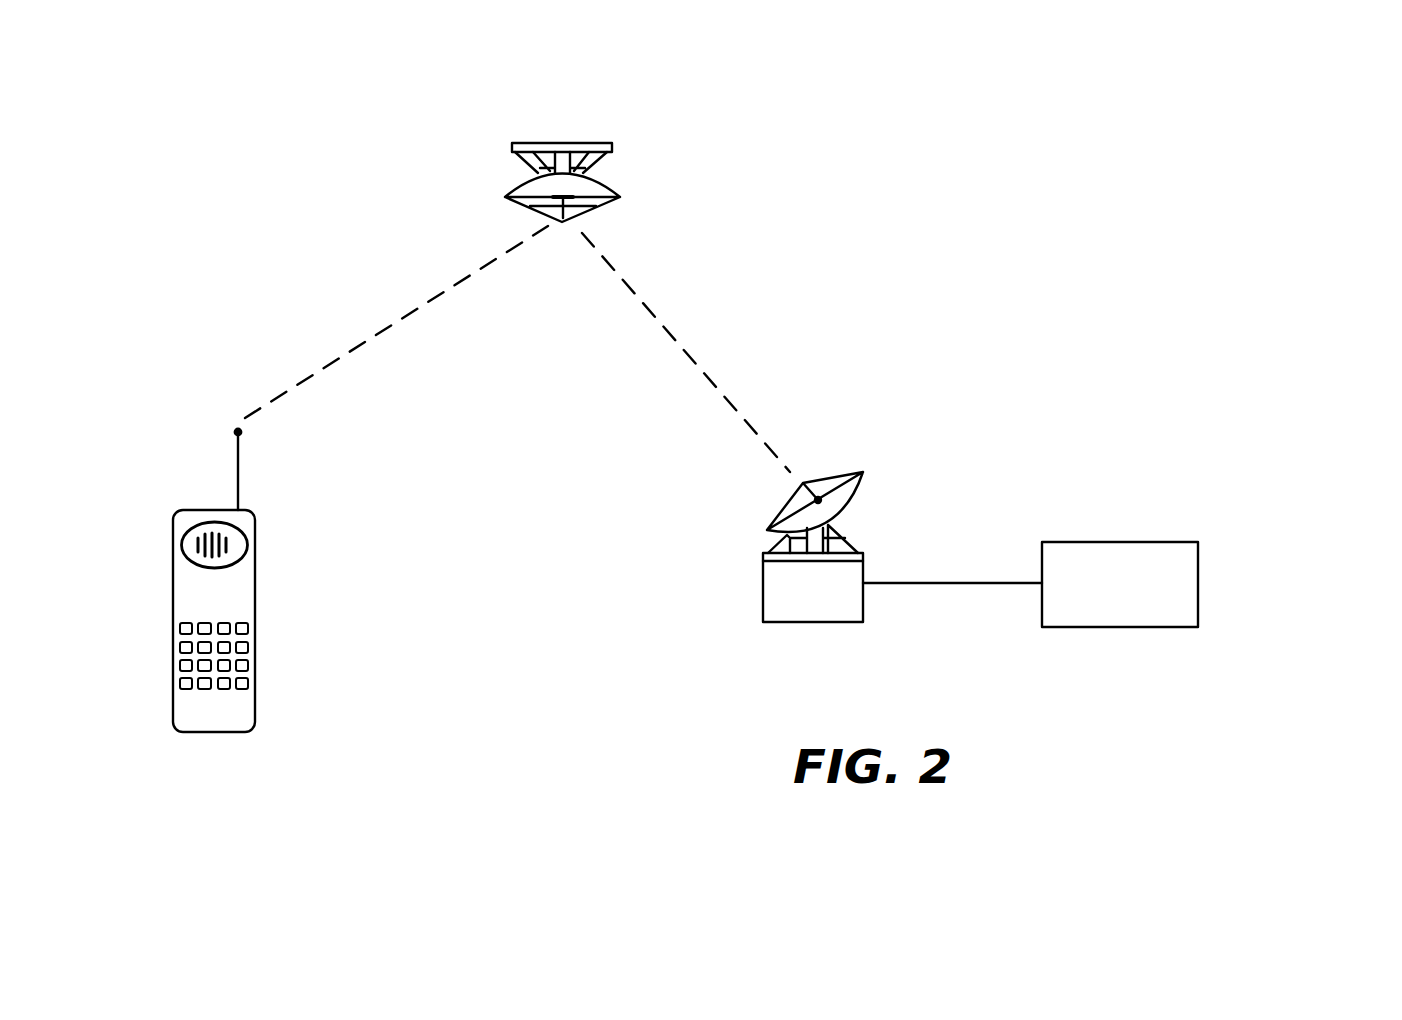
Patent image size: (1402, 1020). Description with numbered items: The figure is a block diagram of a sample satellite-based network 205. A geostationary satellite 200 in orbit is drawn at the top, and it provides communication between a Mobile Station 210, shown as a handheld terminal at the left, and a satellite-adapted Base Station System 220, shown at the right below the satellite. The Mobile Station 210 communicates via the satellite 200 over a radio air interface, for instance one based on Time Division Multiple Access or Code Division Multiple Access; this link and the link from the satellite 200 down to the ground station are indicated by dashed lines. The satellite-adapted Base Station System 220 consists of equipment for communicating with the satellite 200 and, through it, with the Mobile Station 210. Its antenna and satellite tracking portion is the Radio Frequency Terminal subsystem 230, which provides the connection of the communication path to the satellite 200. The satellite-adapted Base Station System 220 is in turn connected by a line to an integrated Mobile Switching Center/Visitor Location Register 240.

The geostationary satellite 200 is at (612, 187).
The satellite-based network 205 is at (1262, 245).
The Mobile Station 210 is at (172, 628).
The satellite-adapted Base Station System 220 is at (658, 470).
The Radio Frequency Terminal subsystem 230 is at (767, 530).
The integrated Mobile Switching Center/Visitor Location Register 240 is at (1115, 542).